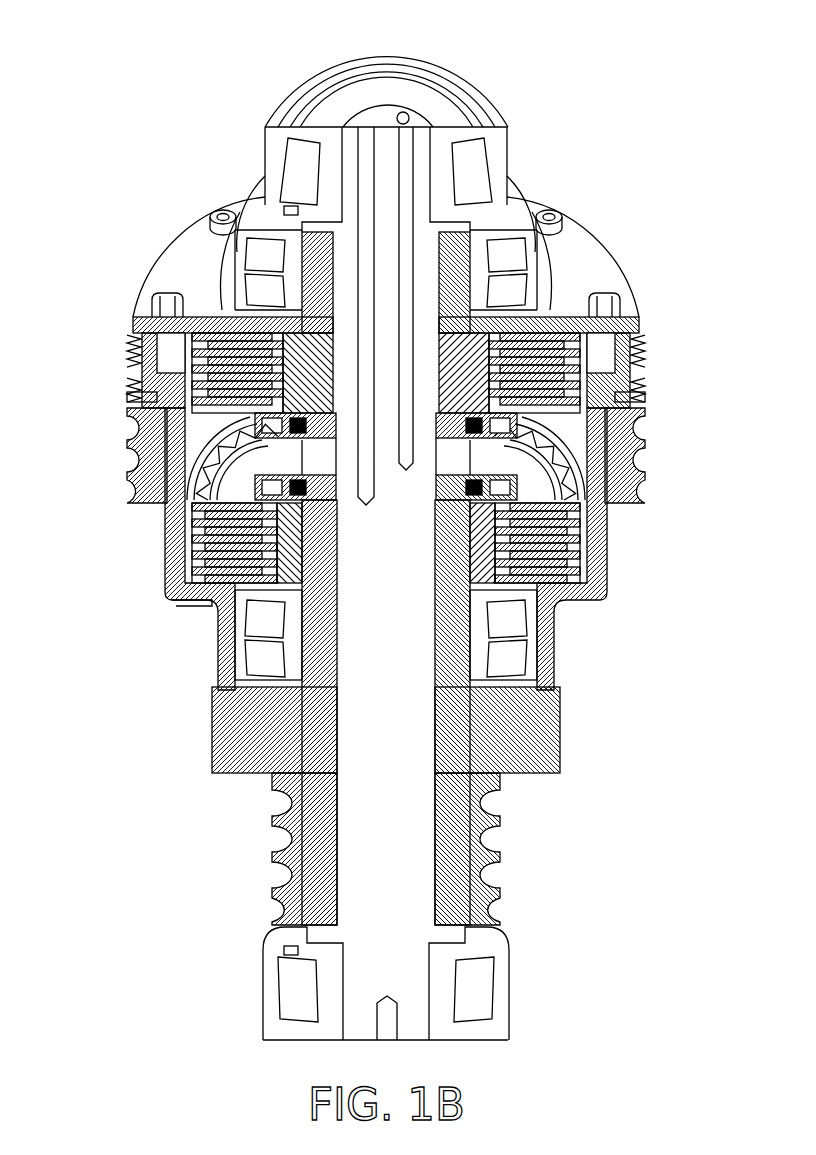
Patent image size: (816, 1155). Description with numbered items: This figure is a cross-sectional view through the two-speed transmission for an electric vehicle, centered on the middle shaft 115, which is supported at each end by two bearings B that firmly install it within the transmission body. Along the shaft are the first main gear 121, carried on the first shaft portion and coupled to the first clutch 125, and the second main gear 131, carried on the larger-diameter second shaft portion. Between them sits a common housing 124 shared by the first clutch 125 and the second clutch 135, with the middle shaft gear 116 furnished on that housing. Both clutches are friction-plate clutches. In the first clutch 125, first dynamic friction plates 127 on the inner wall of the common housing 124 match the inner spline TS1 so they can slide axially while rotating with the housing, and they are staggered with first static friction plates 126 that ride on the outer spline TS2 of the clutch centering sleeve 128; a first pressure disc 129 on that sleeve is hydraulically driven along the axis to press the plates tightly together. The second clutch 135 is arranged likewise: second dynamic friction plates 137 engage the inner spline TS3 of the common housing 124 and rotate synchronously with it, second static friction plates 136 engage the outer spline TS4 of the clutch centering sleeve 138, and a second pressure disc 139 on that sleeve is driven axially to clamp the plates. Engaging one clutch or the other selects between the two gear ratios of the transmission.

The middle shaft 115 is at (377, 113).
The bearings B is at (275, 147).
The inner spline TS1 is at (197, 368).
The outer spline TS2 is at (197, 392).
The inner spline TS3 is at (197, 473).
The outer spline TS4 is at (180, 605).
The middle shaft gear 116 is at (132, 435).
The common housing 124 is at (165, 581).
The second main gear 131 is at (213, 716).
The first main gear 121 is at (283, 868).
The first clutch 125 is at (708, 333).
The clutch centering sleeve 128 is at (640, 340).
The first dynamic friction plates 127 is at (580, 373).
The first static friction plates 126 is at (625, 398).
The first pressure disc 129 is at (520, 416).
The second clutch 135 is at (708, 477).
The second pressure disc 139 is at (610, 485).
The second static friction plates 136 is at (580, 527).
The second dynamic friction plates 137 is at (580, 538).
The clutch centering sleeve 138 is at (603, 587).